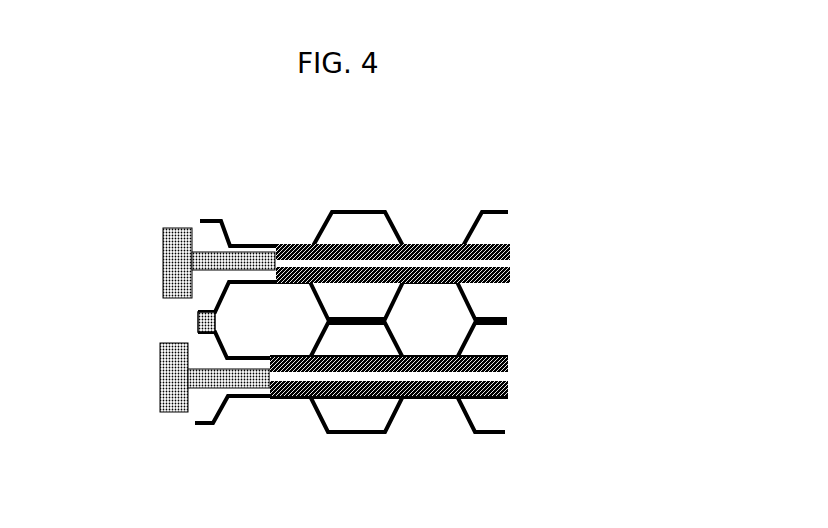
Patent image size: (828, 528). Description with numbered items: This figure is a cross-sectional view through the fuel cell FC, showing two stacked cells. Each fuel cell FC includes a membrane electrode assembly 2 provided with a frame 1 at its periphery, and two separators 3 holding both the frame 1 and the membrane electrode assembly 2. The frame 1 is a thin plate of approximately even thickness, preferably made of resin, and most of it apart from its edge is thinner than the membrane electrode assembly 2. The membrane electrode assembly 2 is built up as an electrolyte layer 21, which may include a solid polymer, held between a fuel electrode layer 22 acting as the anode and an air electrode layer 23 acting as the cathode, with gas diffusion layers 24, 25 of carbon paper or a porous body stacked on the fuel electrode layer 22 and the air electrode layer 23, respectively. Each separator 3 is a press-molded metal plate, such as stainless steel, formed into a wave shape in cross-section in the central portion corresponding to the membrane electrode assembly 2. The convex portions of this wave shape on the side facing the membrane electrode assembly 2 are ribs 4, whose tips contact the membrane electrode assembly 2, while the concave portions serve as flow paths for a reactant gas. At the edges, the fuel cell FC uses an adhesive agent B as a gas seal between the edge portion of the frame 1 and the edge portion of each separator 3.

The fuel cell FC is at (157, 214).
The frame 1 is at (170, 259).
The membrane electrode assembly 2 is at (511, 258).
The separator 3 is at (309, 222).
The rib 4 is at (392, 222).
The adhesive agent B is at (222, 284).
The electrolyte layer 21 is at (507, 375).
The fuel electrode layer 22 is at (507, 372).
The air electrode layer 23 is at (507, 375).
The gas diffusion layer 24 is at (507, 372).
The gas diffusion layer 25 is at (487, 398).